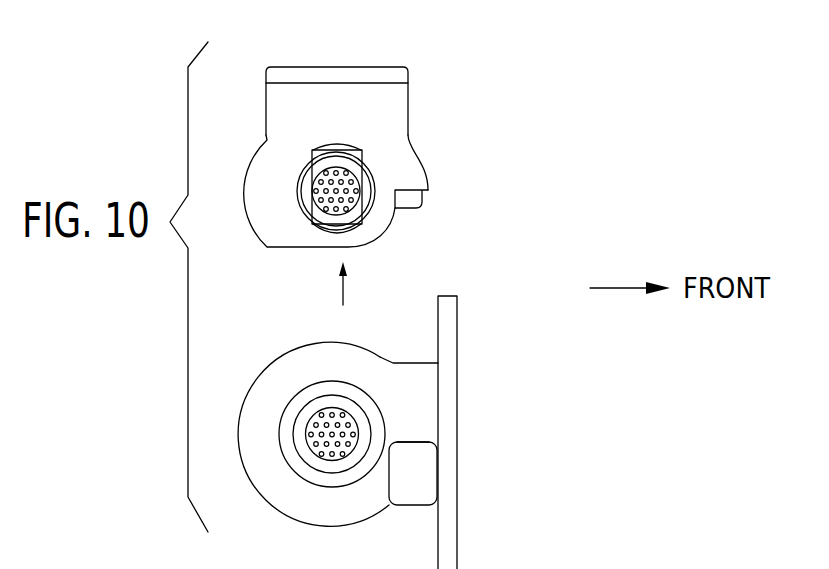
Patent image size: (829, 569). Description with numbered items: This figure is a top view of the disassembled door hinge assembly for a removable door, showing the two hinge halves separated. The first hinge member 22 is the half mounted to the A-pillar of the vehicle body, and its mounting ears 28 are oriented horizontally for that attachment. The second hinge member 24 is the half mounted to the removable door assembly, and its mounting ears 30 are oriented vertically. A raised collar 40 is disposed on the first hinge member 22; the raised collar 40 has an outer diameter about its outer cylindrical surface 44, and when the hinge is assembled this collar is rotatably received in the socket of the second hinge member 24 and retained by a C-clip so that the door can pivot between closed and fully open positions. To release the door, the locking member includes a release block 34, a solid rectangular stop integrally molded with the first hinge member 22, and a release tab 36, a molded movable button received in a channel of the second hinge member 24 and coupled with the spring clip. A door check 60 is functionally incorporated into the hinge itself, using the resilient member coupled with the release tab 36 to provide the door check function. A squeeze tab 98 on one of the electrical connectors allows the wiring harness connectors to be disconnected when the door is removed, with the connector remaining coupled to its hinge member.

The first hinge member 22 is at (420, 395).
The second hinge member 24 is at (392, 105).
The mounting ears 28 is at (450, 547).
The mounting ears 30 is at (337, 72).
The release block 34 is at (427, 477).
The release tab 36 is at (407, 198).
The raised collar 40 is at (333, 468).
The outer cylindrical surface 44 is at (312, 388).
The door check 60 is at (422, 442).
The squeeze tab 98 is at (320, 230).